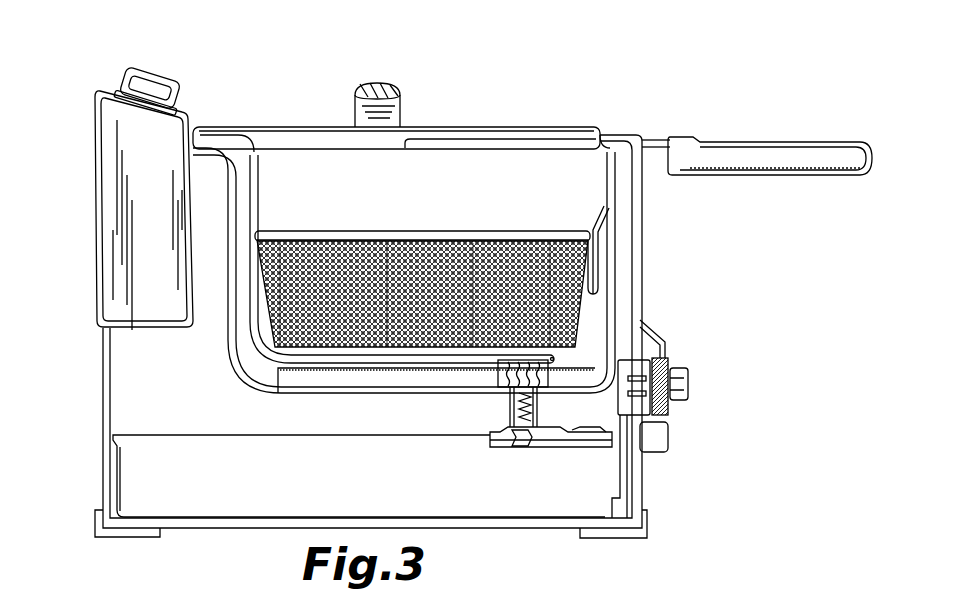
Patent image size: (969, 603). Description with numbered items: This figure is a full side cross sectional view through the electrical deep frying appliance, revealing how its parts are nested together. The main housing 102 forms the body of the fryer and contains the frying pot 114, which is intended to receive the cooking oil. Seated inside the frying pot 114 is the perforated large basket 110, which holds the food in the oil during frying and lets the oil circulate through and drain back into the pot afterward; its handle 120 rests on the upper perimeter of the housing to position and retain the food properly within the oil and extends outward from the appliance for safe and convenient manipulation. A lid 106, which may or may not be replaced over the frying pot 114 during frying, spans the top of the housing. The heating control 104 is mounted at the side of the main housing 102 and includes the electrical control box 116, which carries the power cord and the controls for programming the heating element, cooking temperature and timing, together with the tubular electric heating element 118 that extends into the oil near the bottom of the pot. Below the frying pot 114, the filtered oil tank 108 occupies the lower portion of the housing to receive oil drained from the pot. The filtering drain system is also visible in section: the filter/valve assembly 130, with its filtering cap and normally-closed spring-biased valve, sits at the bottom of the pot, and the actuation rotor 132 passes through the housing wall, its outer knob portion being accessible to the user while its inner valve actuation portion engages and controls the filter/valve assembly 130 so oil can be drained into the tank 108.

The main housing 102 is at (642, 248).
The heating control 104 is at (92, 192).
The lid 106 is at (458, 125).
The filtered oil tank 108 is at (275, 497).
The large basket 110 is at (422, 235).
The frying pot 114 is at (233, 347).
The electrical control box 116 is at (168, 66).
The tubular electric heating element 118 is at (278, 392).
The basket handle 120 is at (776, 137).
The filter/valve assembly 130 is at (507, 398).
The actuation rotor 132 is at (688, 372).